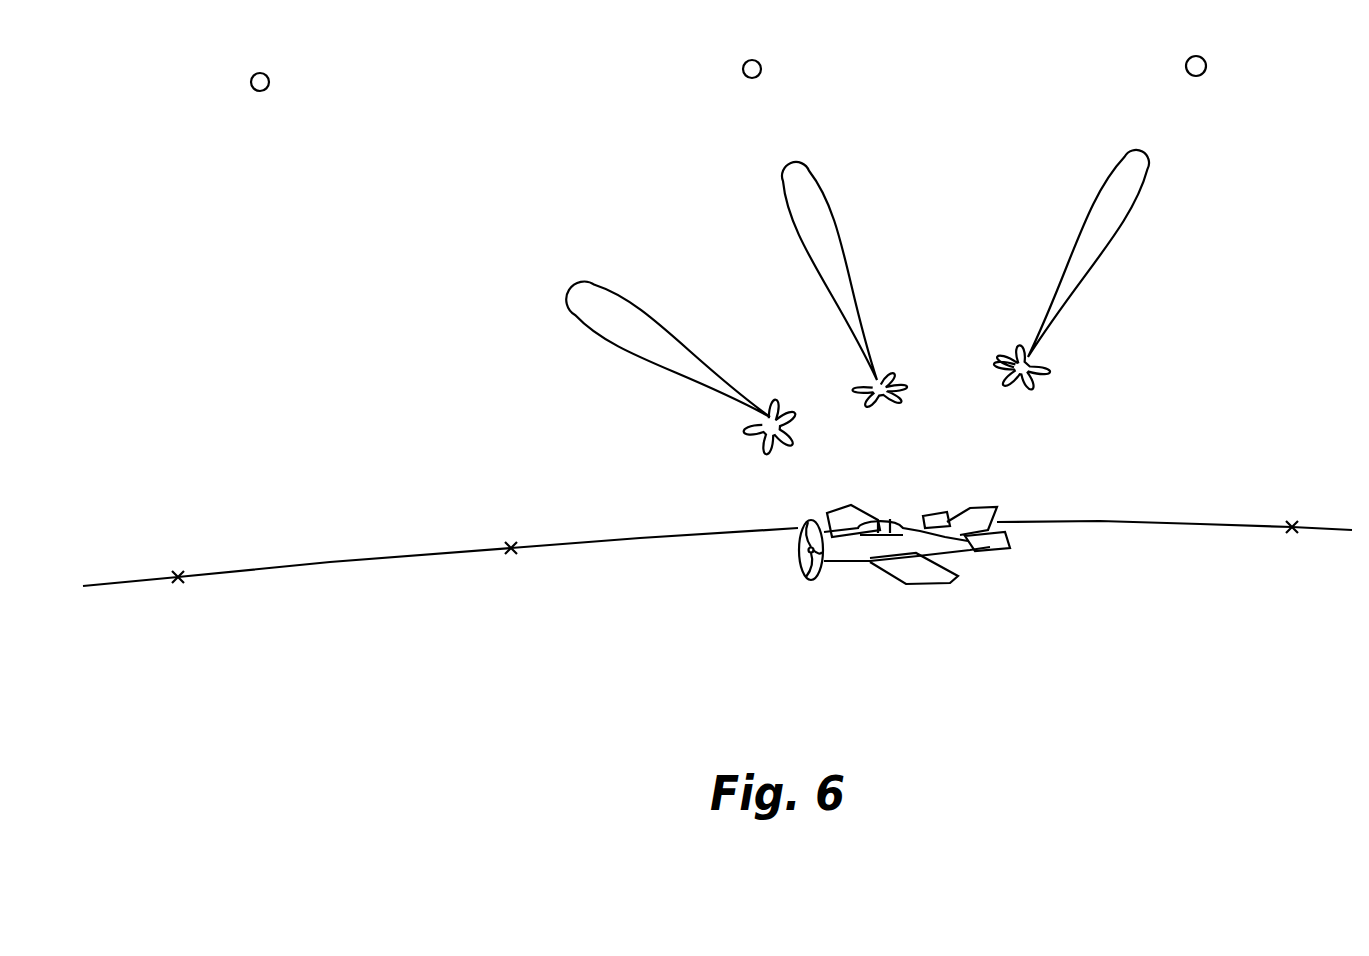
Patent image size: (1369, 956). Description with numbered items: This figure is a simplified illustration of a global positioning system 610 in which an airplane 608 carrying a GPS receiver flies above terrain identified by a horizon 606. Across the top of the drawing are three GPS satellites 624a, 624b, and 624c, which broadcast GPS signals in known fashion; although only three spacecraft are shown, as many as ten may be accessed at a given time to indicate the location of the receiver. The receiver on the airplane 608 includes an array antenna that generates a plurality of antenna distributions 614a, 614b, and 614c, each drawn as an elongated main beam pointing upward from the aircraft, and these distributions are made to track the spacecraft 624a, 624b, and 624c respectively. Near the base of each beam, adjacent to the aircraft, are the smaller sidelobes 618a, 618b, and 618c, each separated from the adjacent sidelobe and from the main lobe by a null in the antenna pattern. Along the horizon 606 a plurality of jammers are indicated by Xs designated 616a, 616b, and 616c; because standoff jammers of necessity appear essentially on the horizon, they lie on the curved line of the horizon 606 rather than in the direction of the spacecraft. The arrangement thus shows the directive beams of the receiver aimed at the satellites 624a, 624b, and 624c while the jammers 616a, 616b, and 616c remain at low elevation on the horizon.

The horizon 606 is at (692, 530).
The airplane 608 is at (860, 565).
The global positioning system 610 is at (780, 670).
The antenna distribution 614a is at (622, 300).
The antenna distribution 614b is at (842, 232).
The antenna distribution 614c is at (1125, 232).
The jammer 616a is at (178, 570).
The jammer 616b is at (510, 541).
The jammer 616c is at (1293, 520).
The sidelobe 618a is at (748, 432).
The sidelobe 618b is at (867, 408).
The sidelobe 618c is at (1042, 388).
The GPS satellite 624a is at (269, 86).
The GPS satellite 624b is at (761, 68).
The GPS satellite 624c is at (1206, 68).